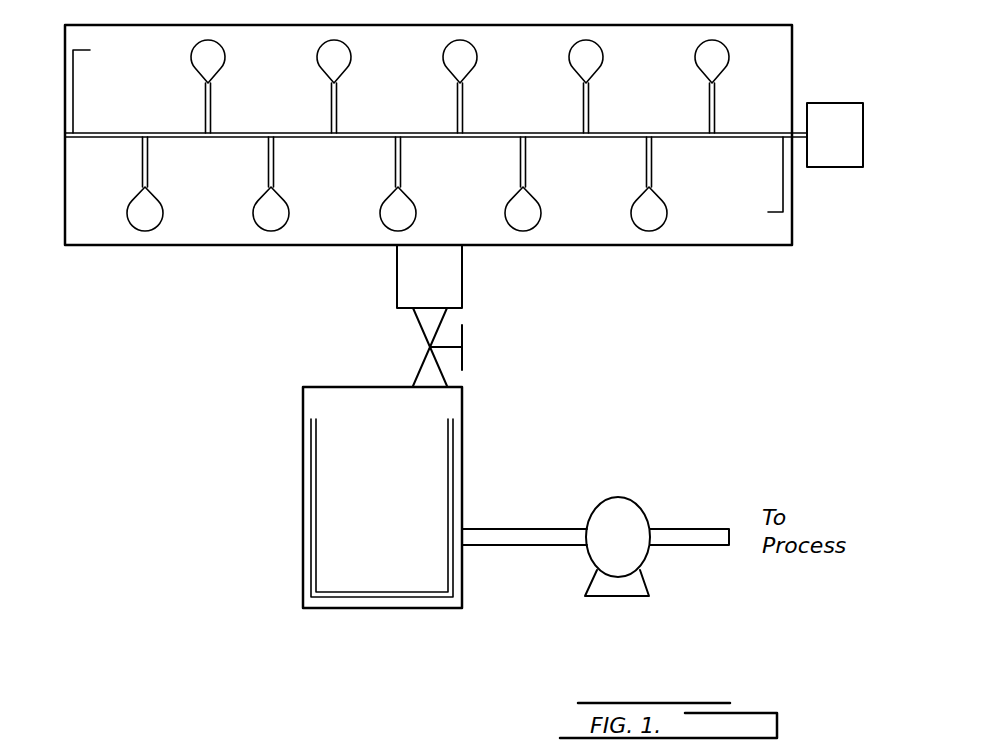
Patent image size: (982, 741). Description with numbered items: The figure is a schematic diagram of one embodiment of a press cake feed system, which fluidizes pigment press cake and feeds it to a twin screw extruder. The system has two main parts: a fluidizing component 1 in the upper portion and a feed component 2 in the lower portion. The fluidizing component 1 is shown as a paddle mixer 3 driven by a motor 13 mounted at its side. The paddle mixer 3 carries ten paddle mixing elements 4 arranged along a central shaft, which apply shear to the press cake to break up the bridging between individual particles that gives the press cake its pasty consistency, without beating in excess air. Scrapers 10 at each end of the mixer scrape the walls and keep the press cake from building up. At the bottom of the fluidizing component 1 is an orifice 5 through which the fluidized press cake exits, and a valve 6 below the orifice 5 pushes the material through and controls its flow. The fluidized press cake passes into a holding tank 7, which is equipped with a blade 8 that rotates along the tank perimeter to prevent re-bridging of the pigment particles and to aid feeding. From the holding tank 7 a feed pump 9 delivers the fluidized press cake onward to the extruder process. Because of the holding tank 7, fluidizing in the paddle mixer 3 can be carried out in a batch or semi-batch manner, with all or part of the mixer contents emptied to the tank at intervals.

The fluidizing component 1 is at (65, 233).
The feed component 2 is at (486, 541).
The paddle mixer 3 is at (688, 138).
The paddle mixing elements 4 is at (510, 212).
The orifice 5 is at (410, 277).
The valve 6 is at (462, 347).
The holding tank 7 is at (303, 403).
The blade 8 is at (311, 517).
The feed pump 9 is at (622, 519).
The scrapers 10 is at (73, 76).
The motor 13 is at (835, 113).